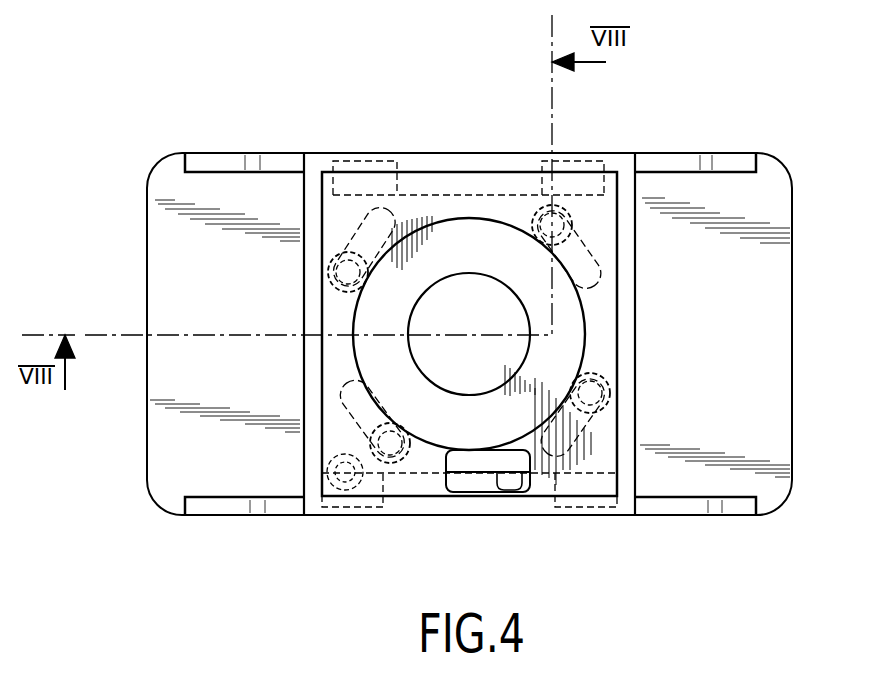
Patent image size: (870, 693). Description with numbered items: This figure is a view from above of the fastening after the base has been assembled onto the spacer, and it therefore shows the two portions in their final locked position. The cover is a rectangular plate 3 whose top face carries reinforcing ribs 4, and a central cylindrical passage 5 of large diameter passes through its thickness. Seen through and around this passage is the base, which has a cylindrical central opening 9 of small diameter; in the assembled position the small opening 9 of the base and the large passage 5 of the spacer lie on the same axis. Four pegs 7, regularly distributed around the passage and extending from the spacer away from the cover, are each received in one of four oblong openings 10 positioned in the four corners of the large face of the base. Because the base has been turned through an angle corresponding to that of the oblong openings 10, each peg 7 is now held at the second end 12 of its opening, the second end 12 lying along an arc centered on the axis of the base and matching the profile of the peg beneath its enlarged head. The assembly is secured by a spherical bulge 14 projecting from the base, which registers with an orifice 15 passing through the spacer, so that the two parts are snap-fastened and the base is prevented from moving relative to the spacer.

The rectangular plate 3 is at (774, 279).
The reinforcing ribs 4 is at (705, 160).
The central cylindrical passage 5 is at (480, 219).
The pegs 7 is at (575, 212).
The cylindrical central opening 9 is at (490, 387).
The oblong openings 10 is at (398, 220).
The second end 12 is at (523, 207).
The spherical bulge 14 is at (332, 461).
The orifice 15 is at (345, 483).